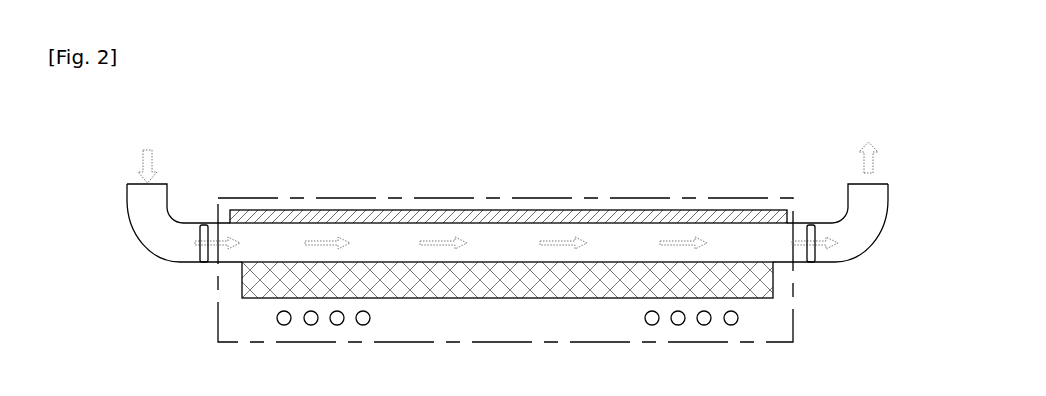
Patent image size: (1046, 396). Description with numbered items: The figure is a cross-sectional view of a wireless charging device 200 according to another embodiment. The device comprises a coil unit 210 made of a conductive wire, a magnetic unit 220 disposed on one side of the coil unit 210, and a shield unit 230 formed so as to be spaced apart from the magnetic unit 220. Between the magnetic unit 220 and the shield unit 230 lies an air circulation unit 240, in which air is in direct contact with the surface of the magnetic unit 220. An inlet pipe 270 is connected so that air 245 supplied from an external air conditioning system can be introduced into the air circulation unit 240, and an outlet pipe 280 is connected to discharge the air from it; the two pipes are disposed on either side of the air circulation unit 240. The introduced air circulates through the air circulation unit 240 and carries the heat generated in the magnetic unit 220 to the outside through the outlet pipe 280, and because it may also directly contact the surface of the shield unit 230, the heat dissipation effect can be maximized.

The wireless charging device 200 is at (535, 150).
The coil unit 210 is at (728, 325).
The magnetic unit 220 is at (767, 283).
The shield unit 230 is at (641, 215).
The air circulation unit 240 is at (800, 232).
The air 245 is at (221, 243).
The inlet pipe 270 is at (135, 210).
The outlet pipe 280 is at (875, 216).